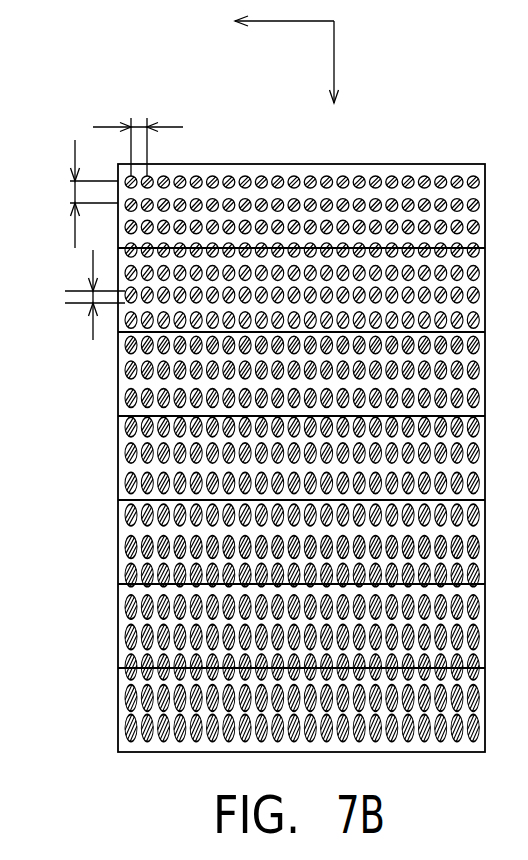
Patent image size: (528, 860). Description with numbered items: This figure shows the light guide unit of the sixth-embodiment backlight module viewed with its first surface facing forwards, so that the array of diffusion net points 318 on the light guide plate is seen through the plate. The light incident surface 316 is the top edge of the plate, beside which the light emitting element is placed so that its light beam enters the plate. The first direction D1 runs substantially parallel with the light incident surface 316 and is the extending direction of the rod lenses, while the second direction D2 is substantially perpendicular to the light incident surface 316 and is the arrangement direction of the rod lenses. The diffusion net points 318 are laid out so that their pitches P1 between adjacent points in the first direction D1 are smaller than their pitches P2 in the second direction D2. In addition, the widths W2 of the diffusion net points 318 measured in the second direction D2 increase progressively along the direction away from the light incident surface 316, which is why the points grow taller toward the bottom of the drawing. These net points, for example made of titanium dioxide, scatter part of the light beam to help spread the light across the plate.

The light incident surface 316 is at (413, 163).
The diffusion net points 318 is at (245, 176).
The pitch in first direction P1 is at (138, 125).
The pitch in second direction P2 is at (70, 194).
The width of diffusion net point in second direction W2 is at (73, 295).
The first direction D1 is at (265, 53).
The second direction D2 is at (336, 131).